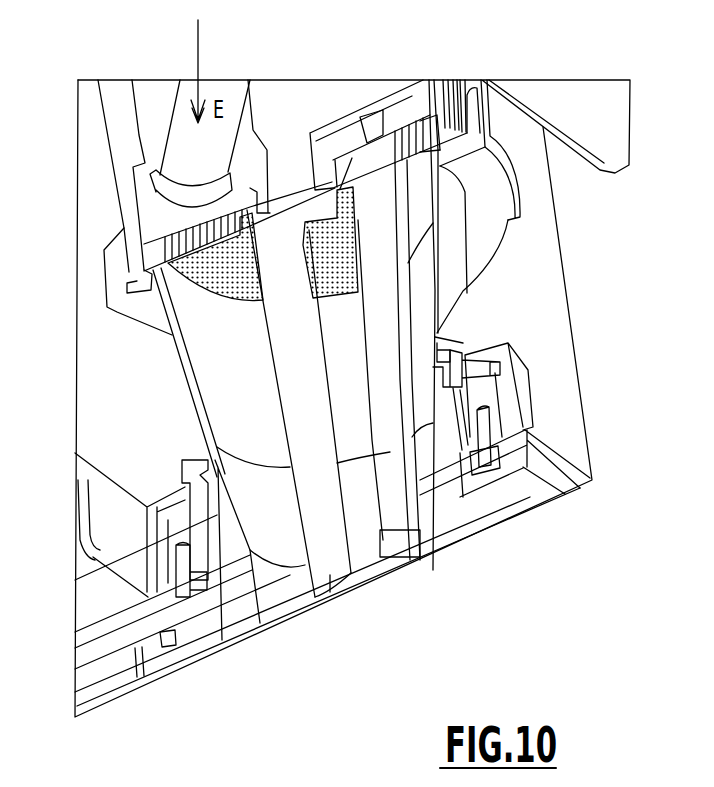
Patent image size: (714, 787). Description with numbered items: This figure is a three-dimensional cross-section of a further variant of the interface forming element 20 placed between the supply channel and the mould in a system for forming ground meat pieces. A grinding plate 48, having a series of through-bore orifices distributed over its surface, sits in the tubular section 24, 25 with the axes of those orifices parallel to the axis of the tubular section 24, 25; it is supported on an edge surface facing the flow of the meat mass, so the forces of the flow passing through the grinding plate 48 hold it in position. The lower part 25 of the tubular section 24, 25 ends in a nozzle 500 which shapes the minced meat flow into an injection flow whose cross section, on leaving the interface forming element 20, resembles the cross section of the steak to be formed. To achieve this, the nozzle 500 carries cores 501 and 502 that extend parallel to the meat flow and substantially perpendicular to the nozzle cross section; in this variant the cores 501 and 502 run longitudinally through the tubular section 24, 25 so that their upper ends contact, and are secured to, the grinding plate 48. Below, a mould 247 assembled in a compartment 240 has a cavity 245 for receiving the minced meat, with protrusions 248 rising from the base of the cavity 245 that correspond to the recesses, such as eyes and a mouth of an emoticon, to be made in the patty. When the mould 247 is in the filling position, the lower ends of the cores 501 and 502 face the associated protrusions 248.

The grinding plate 48 is at (367, 163).
The interface forming element 20 is at (462, 90).
The tubular section 24 is at (437, 227).
The lower part of the tubular section 25 is at (433, 334).
The core 501 is at (287, 357).
The core 502 is at (385, 369).
The nozzle 500 is at (470, 428).
The mould 247 is at (453, 517).
The compartment 240 is at (428, 530).
The protrusions 248 is at (330, 580).
The cavity 245 is at (152, 650).